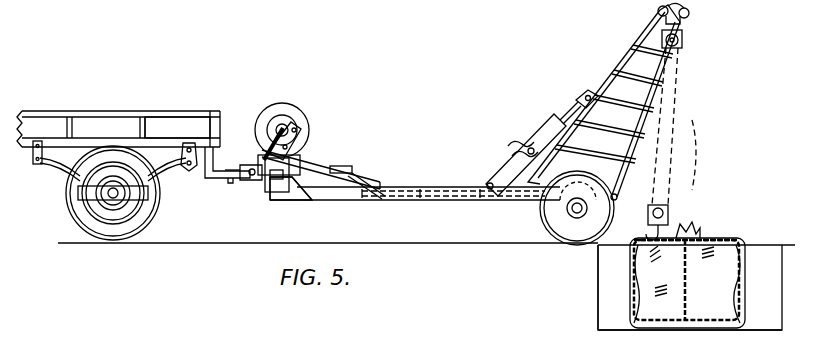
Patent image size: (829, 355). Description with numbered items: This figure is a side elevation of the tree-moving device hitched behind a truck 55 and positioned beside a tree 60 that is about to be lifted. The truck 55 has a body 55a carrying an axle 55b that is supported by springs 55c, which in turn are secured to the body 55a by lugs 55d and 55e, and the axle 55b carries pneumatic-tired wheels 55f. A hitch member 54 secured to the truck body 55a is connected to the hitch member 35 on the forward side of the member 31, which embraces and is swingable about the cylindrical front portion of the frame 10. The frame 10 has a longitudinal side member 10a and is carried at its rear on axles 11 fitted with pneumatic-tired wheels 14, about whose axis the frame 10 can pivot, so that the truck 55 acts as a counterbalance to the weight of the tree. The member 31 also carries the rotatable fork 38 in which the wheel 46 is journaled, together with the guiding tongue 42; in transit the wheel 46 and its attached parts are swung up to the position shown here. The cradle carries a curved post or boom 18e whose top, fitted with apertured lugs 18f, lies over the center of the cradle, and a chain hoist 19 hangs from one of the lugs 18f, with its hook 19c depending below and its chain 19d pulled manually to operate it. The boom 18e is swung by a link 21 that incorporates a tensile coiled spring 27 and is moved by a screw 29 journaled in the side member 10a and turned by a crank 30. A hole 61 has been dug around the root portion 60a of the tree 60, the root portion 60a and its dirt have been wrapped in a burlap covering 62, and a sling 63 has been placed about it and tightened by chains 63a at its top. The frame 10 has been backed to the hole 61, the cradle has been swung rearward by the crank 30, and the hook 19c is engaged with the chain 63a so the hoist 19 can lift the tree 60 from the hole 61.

The frame 10 is at (428, 185).
The side member 10a is at (335, 201).
The axles 11 is at (574, 212).
The wheels 14 is at (566, 207).
The arm or post 18e is at (614, 73).
The loops or apertured lugs 18f is at (689, 12).
The chain hoist 19 is at (683, 42).
The hook 19c is at (653, 224).
The chain 19d is at (672, 148).
The link 21 is at (510, 143).
The tensile coiled spring 27 is at (531, 130).
The screw 29 is at (432, 201).
The crank 30 is at (354, 172).
The member 31 is at (276, 193).
The hitch member 35 is at (244, 183).
The fork or U-shaped member 38 is at (266, 160).
The guiding tongue 42 is at (305, 165).
The wheel 46 is at (292, 114).
The hitch member 54 is at (218, 163).
The truck 55 is at (136, 110).
The body 55a is at (166, 126).
The axle 55b is at (118, 195).
The springs 55c is at (66, 176).
The lug 55d is at (36, 165).
The lug 55e is at (197, 168).
The wheels 55f is at (76, 220).
The tree 60 is at (691, 223).
The root portion 60a is at (742, 266).
The hole or trench 61 is at (628, 258).
The covering 62 is at (640, 272).
The sling 63 is at (716, 328).
The chains 63a is at (718, 238).